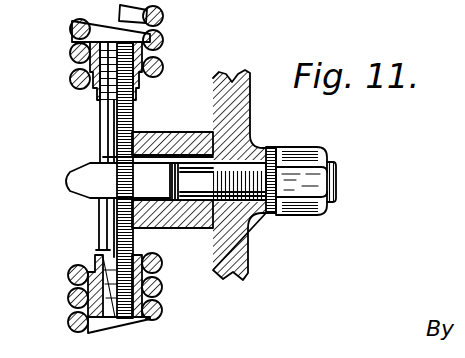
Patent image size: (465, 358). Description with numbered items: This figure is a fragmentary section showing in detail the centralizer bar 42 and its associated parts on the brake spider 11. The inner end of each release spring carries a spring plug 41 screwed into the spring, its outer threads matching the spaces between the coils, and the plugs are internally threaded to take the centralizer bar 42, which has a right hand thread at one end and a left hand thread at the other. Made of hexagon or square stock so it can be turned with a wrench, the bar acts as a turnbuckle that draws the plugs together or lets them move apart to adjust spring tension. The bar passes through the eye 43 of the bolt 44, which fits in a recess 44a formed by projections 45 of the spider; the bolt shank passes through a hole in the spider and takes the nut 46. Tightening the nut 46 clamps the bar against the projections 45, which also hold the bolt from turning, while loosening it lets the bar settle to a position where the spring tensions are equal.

The brake spider 11 is at (243, 112).
The spring plug 41 is at (155, 80).
The centralizer bar 42 is at (98, 131).
The eye 43 is at (96, 182).
The bolt 44 is at (213, 182).
The recess 44a is at (196, 157).
The projections 45 is at (140, 133).
The nut 46 is at (309, 148).